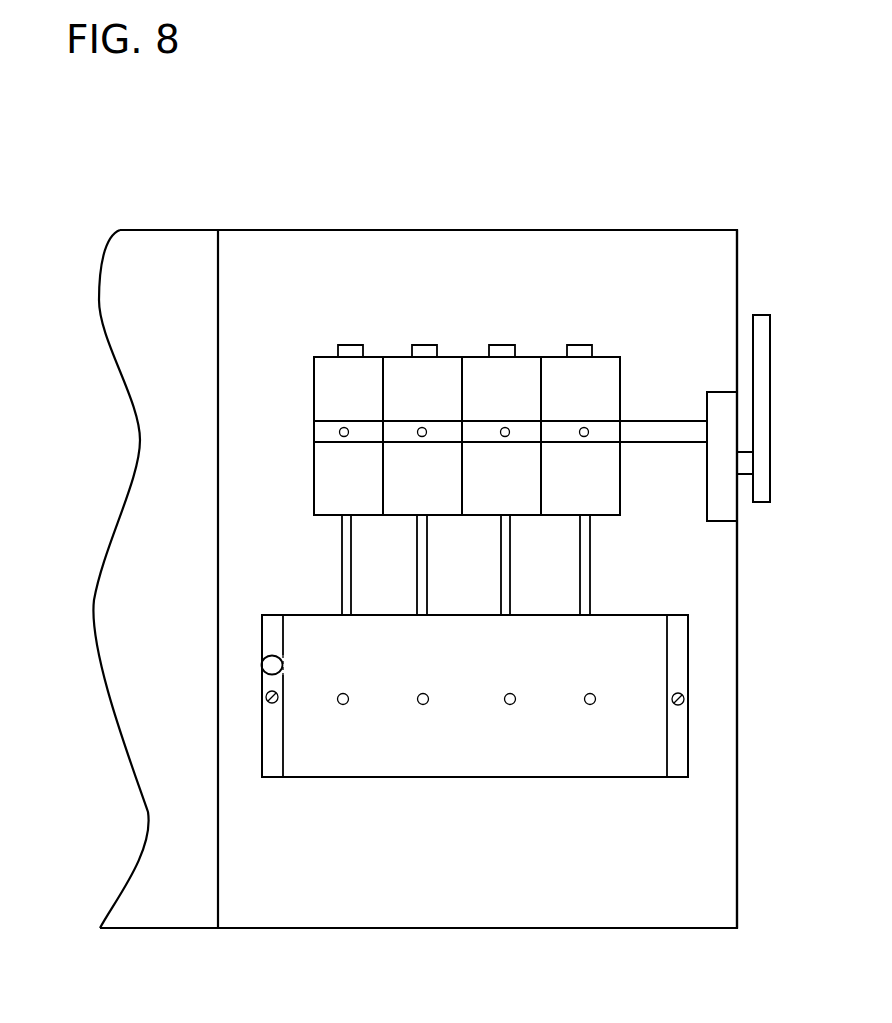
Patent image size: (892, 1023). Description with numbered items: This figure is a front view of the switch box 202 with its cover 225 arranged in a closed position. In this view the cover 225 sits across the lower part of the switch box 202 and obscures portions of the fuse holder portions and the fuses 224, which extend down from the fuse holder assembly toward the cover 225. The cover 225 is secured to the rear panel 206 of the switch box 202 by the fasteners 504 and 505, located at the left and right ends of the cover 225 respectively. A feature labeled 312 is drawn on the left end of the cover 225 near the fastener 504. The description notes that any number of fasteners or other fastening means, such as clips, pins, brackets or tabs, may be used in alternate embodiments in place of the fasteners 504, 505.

The switch box 202 is at (593, 198).
The rear panel 206 is at (712, 272).
The fuses 224 is at (352, 551).
The cover 225 is at (475, 720).
The slot 312 is at (273, 656).
The fastener 504 is at (266, 697).
The fastener 505 is at (686, 698).